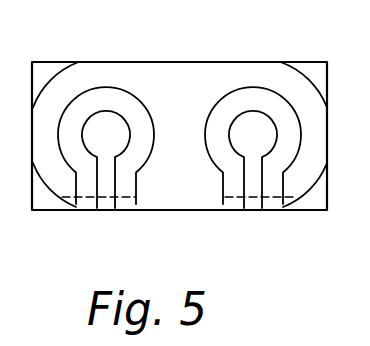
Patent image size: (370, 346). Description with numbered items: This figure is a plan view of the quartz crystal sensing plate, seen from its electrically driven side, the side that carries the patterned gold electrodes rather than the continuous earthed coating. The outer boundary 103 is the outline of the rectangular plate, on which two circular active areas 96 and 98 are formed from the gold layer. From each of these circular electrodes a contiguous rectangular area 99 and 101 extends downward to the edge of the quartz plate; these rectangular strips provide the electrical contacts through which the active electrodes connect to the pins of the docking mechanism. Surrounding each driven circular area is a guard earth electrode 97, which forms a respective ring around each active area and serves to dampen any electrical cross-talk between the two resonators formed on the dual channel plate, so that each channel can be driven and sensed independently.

The housing 103 is at (98, 62).
The guard earth electrode 97 is at (188, 106).
The active area 98 is at (118, 150).
The active area 96 is at (265, 150).
The rectangular area 101 is at (108, 182).
The rectangular area 99 is at (250, 175).